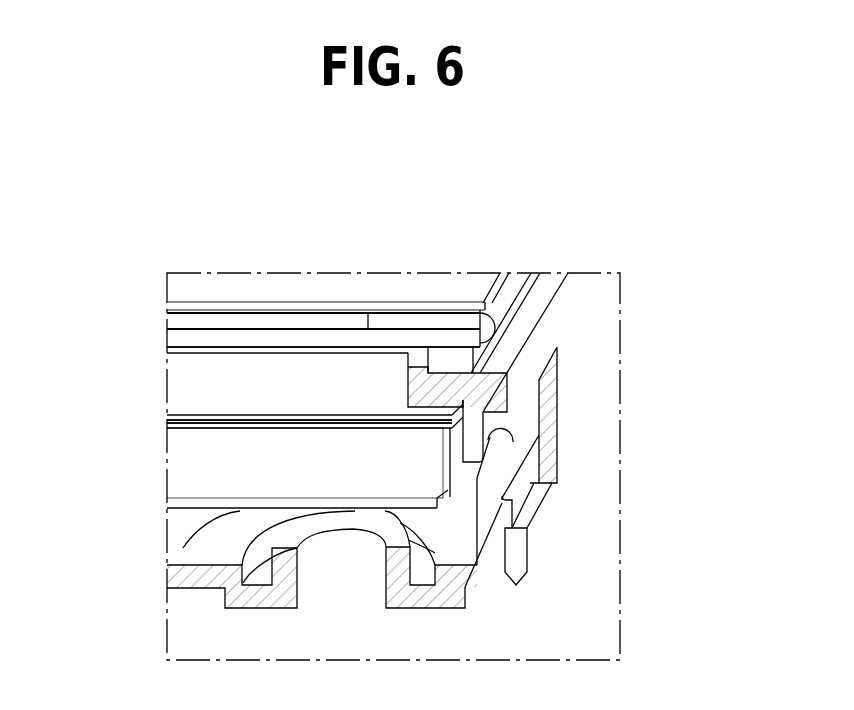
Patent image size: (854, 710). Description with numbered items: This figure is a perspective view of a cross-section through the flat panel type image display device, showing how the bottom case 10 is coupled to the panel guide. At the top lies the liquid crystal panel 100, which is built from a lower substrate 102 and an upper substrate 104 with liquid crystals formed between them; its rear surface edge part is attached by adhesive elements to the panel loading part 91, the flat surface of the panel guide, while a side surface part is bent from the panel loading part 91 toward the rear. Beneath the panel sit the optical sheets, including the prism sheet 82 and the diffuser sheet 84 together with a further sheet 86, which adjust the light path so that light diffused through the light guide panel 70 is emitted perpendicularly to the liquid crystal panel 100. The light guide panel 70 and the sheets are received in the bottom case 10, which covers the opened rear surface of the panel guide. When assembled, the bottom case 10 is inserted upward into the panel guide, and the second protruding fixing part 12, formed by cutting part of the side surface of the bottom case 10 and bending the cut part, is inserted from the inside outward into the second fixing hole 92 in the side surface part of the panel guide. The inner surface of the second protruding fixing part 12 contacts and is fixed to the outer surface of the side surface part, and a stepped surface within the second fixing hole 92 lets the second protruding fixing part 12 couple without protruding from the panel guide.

The bottom case 10 is at (490, 565).
The second protruding fixing part 12 is at (557, 430).
The light guide panel 70 is at (187, 468).
The prism sheet 82 is at (168, 427).
The diffuser sheet 84 is at (168, 421).
The third layer 86 is at (168, 415).
The panel loading part 91 is at (583, 322).
The second fixing hole 92 is at (548, 378).
The liquid crystal panel 100 is at (318, 220).
The lower substrate 102 is at (300, 338).
The upper substrate 104 is at (248, 323).